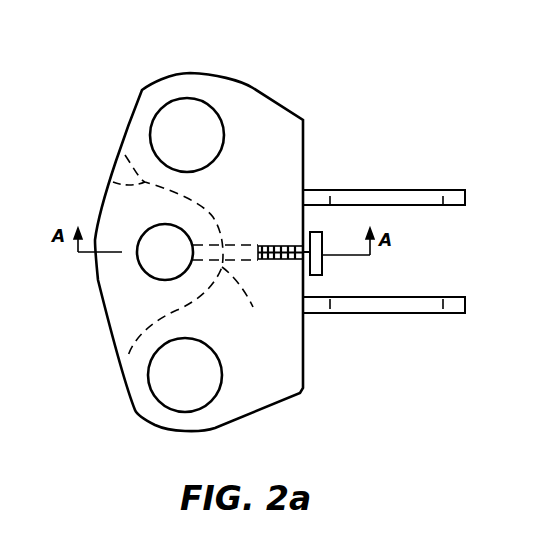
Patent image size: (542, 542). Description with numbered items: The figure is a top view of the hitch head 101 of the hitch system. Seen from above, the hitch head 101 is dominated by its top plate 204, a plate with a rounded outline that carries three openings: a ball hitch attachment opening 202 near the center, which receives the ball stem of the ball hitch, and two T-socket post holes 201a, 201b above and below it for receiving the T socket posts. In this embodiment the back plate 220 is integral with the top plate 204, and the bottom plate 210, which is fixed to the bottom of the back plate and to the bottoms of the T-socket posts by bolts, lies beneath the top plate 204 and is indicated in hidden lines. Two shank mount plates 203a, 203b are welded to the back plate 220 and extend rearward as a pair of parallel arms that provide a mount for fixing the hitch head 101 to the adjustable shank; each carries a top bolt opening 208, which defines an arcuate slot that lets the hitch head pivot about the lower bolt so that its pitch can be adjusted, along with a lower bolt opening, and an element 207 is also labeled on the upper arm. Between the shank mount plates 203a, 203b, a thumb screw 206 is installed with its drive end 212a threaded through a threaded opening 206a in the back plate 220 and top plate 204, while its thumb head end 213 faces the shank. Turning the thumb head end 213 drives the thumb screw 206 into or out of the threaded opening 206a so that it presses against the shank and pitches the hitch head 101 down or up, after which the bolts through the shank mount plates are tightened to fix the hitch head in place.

The hitch head 101 is at (232, 53).
The T-socket post hole 201a is at (168, 118).
The T-socket post hole 201b is at (165, 377).
The ball hitch attachment opening 202 is at (155, 225).
The shank mount plate 203a is at (427, 190).
The shank mount plate 203b is at (417, 313).
The top plate 204 is at (257, 370).
The thumb screw 206 is at (322, 262).
The threaded opening 206a is at (250, 303).
The upper prong 207 is at (380, 193).
The top bolt opening 208 is at (387, 313).
The bottom plate 210 is at (115, 183).
The drive end 212a is at (270, 243).
The thumb head end 213 is at (322, 240).
The back plate 220 is at (340, 357).